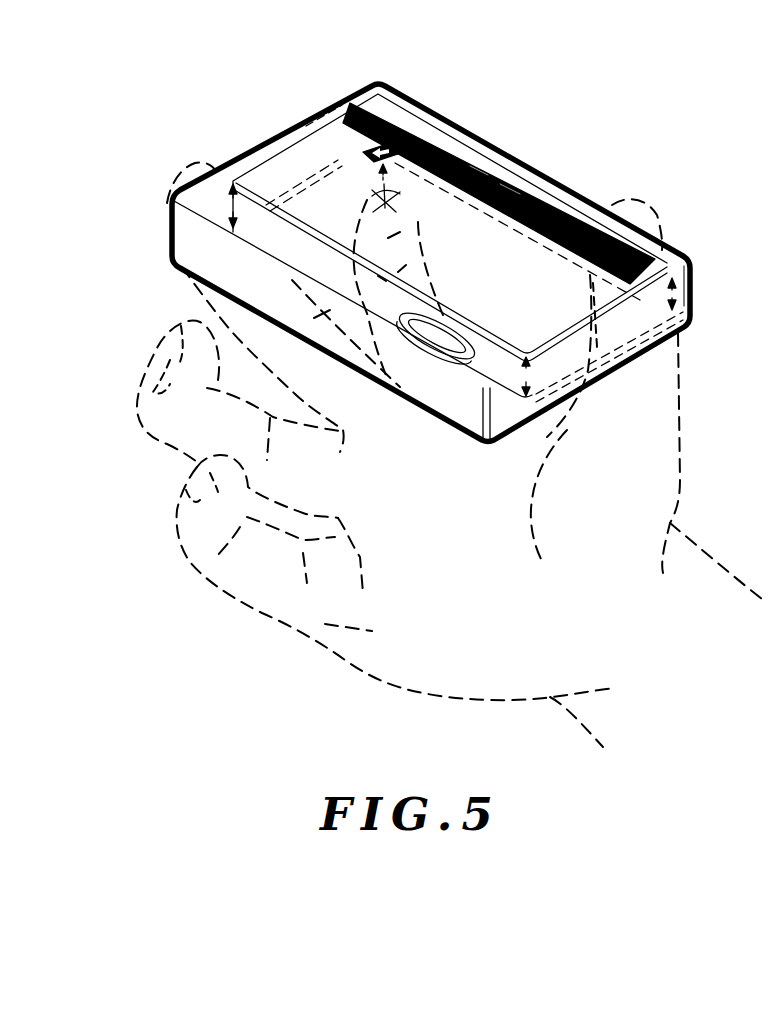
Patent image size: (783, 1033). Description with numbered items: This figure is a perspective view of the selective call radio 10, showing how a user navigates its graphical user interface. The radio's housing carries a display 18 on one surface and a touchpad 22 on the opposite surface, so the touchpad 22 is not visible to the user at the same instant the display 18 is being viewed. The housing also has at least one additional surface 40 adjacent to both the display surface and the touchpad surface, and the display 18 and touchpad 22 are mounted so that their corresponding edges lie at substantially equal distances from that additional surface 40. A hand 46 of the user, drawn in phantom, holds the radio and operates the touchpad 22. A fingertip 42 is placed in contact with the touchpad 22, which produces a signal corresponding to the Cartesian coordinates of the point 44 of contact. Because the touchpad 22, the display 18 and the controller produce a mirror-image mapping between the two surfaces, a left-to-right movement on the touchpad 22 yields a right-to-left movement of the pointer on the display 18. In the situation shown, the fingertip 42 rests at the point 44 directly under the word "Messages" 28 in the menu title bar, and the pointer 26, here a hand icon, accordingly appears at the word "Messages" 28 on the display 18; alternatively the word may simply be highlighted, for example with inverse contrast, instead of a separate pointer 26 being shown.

The selective call radio 10 is at (636, 164).
The display 18 is at (312, 233).
The touchpad 22 is at (365, 262).
The pointer 26 is at (362, 154).
The title "Messages" 28 is at (428, 113).
The additional surface 40 is at (677, 286).
The fingertip 42 is at (392, 203).
The point of contact 44 is at (478, 152).
The hand 46 is at (340, 655).